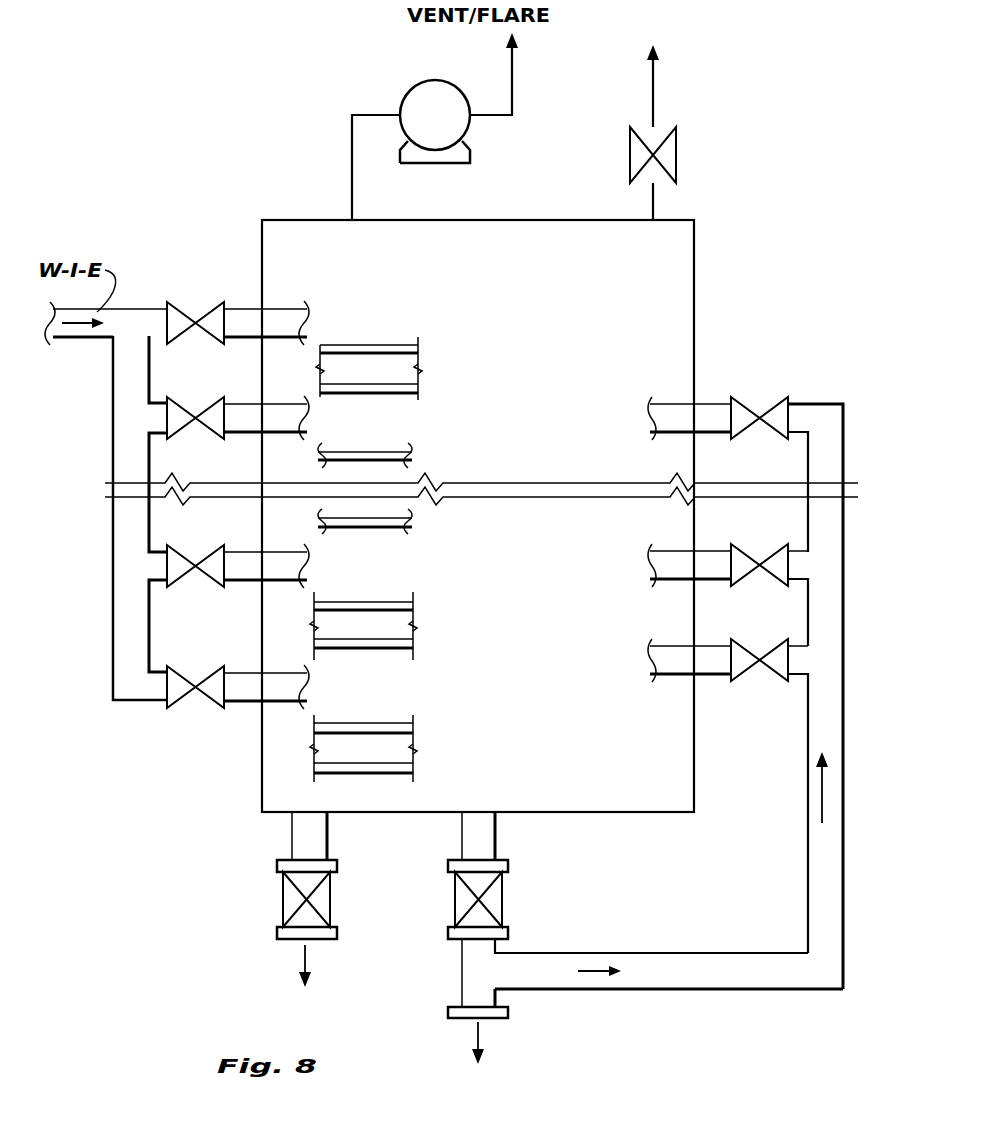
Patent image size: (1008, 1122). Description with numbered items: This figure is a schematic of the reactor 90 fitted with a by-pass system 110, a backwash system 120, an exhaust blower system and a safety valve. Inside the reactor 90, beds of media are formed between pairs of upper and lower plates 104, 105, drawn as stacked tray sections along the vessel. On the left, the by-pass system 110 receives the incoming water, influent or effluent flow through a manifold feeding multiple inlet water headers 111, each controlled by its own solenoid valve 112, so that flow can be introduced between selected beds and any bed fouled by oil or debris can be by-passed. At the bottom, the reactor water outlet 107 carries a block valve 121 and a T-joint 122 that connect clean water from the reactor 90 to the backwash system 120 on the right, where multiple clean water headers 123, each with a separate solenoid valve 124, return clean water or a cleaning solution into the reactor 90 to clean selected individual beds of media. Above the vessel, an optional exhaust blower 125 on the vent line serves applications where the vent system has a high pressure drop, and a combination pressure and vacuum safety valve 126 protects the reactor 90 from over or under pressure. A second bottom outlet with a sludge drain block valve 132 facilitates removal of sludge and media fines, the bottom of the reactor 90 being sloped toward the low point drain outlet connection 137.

The reactor 90 is at (260, 812).
The upper plate 104 is at (387, 345).
The lower plate 105 is at (397, 392).
The reactor water outlet 107 is at (465, 832).
The by-pass system 110 is at (143, 281).
The inlet water header 111 is at (290, 326).
The solenoid valve 112 is at (207, 320).
The backwash system 120 is at (802, 378).
The block valve 121 is at (470, 910).
The T-joint 122 is at (468, 960).
The clean water header 123 is at (682, 408).
The solenoid valve 124 is at (770, 418).
The exhaust blower 125 is at (406, 90).
The combination pressure and vacuum safety valve 126 is at (664, 165).
The sludge drain block valve 132 is at (303, 912).
The low point drain outlet connection 137 is at (300, 850).